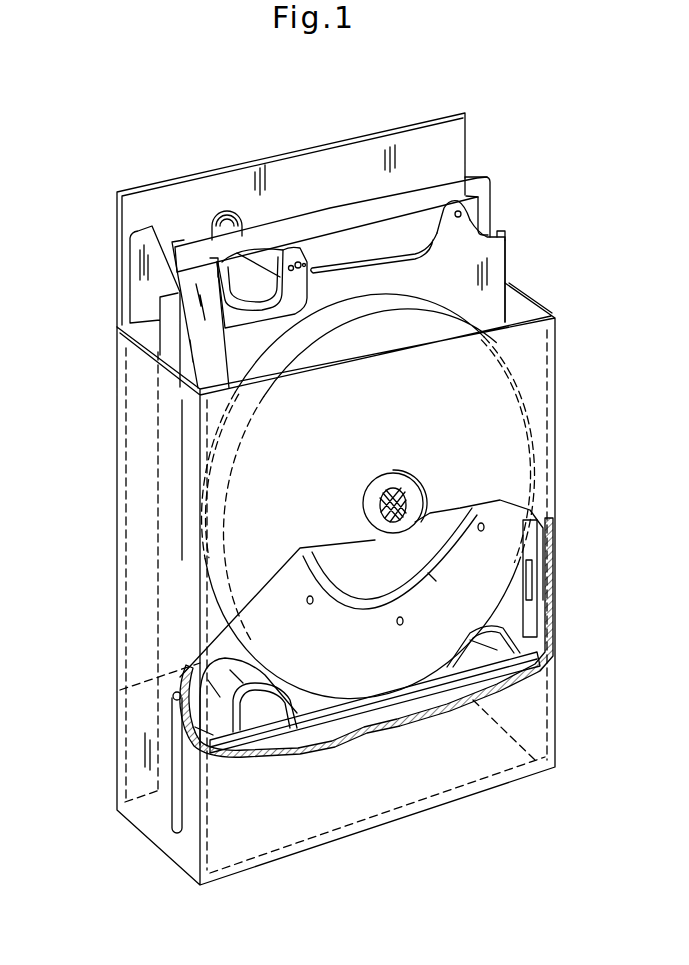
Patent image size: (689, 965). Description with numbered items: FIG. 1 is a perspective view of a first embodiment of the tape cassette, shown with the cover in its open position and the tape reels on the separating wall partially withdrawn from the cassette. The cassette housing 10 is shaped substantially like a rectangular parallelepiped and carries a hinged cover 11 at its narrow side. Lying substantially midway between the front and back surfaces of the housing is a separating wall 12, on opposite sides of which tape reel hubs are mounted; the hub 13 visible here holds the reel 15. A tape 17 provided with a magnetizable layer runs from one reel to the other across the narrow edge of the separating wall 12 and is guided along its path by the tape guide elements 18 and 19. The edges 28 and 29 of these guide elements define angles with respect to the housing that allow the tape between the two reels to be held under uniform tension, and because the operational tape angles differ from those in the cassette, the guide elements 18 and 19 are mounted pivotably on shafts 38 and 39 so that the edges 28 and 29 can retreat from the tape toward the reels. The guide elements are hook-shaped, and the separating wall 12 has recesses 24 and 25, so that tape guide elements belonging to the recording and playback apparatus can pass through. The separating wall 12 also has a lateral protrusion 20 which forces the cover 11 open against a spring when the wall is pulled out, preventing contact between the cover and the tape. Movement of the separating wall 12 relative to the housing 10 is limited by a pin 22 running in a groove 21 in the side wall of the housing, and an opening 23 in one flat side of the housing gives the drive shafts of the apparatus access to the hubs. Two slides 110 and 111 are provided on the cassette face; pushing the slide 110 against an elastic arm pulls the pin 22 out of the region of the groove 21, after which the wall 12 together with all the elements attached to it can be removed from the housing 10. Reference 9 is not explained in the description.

The holder plate 9 is at (462, 294).
The cassette housing 10 is at (541, 318).
The hinged cover 11 is at (320, 156).
The separating wall 12 is at (499, 273).
The tape reel hub 13 is at (373, 587).
The tape reel 15 is at (352, 673).
The tape 17 is at (331, 211).
The tape guide element 18 is at (492, 213).
The tape guide element 19 is at (297, 296).
The lateral protrusion 20 is at (140, 268).
The groove 21 is at (175, 822).
The pin 22 is at (180, 722).
The opening 23 is at (396, 476).
The recess 24 is at (507, 238).
The recess 25 is at (373, 264).
The edge 28 is at (472, 178).
The edge 29 is at (197, 258).
The shaft 38 is at (454, 230).
The shaft 39 is at (301, 262).
The slide 110 is at (268, 727).
The slide 111 is at (469, 665).